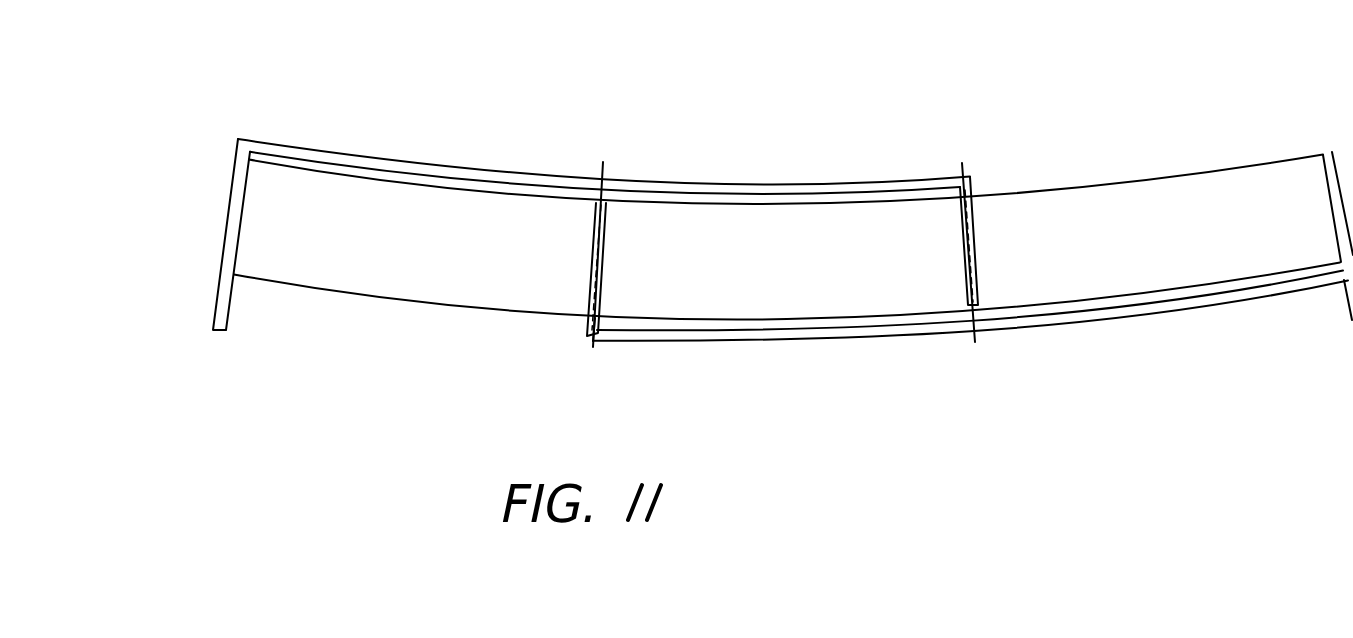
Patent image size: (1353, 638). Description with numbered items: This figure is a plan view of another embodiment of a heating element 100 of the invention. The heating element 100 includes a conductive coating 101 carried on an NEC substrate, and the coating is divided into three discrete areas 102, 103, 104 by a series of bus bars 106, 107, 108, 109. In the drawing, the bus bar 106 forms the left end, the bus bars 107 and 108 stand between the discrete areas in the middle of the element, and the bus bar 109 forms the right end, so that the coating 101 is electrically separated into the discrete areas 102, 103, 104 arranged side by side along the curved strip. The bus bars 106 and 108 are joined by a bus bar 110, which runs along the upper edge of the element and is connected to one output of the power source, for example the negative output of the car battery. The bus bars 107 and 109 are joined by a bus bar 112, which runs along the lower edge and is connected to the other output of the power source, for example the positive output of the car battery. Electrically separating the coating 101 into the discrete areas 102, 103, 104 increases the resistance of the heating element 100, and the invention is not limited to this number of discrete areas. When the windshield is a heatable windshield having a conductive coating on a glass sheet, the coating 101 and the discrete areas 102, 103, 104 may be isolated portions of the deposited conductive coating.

The heating element 100 is at (1243, 130).
The conductive coating 101 is at (1042, 187).
The discrete area 102 is at (443, 283).
The discrete area 103 is at (758, 302).
The discrete area 104 is at (1118, 193).
The bus bar 106 is at (222, 255).
The bus bar 107 is at (593, 265).
The bus bar 108 is at (980, 259).
The bus bar 109 is at (1328, 185).
The bus bar 110 is at (483, 173).
The bus bar 112 is at (923, 327).